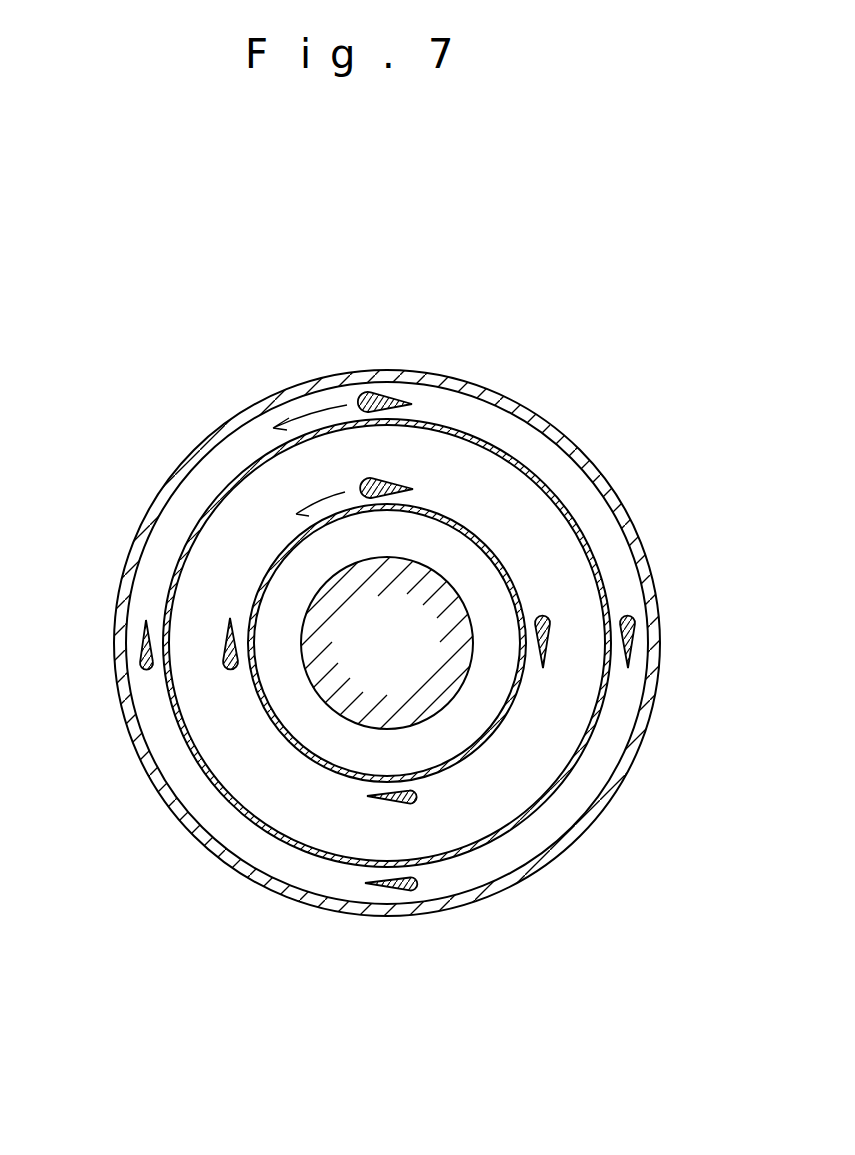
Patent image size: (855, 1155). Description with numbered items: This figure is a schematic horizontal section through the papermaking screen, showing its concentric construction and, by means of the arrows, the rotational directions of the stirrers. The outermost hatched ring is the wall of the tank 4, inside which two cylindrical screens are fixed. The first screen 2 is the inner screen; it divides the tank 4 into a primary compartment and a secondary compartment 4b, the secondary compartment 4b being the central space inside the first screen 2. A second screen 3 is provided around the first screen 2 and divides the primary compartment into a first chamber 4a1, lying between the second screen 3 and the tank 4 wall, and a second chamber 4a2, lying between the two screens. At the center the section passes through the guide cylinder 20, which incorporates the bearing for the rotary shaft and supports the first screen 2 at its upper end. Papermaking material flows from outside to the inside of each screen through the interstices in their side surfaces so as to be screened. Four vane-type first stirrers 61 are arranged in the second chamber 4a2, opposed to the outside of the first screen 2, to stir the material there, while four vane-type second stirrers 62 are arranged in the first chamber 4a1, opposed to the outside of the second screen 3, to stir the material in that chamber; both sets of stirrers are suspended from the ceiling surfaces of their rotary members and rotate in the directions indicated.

The first screen 2 is at (468, 537).
The second screen 3 is at (583, 542).
The tank 4 is at (566, 437).
The first chamber 4a1 is at (529, 846).
The second chamber 4a2 is at (548, 780).
The secondary compartment 4b is at (498, 599).
The guide cylinder 20 is at (332, 705).
The first stirrers 61 is at (394, 482).
The second stirrers 62 is at (377, 396).